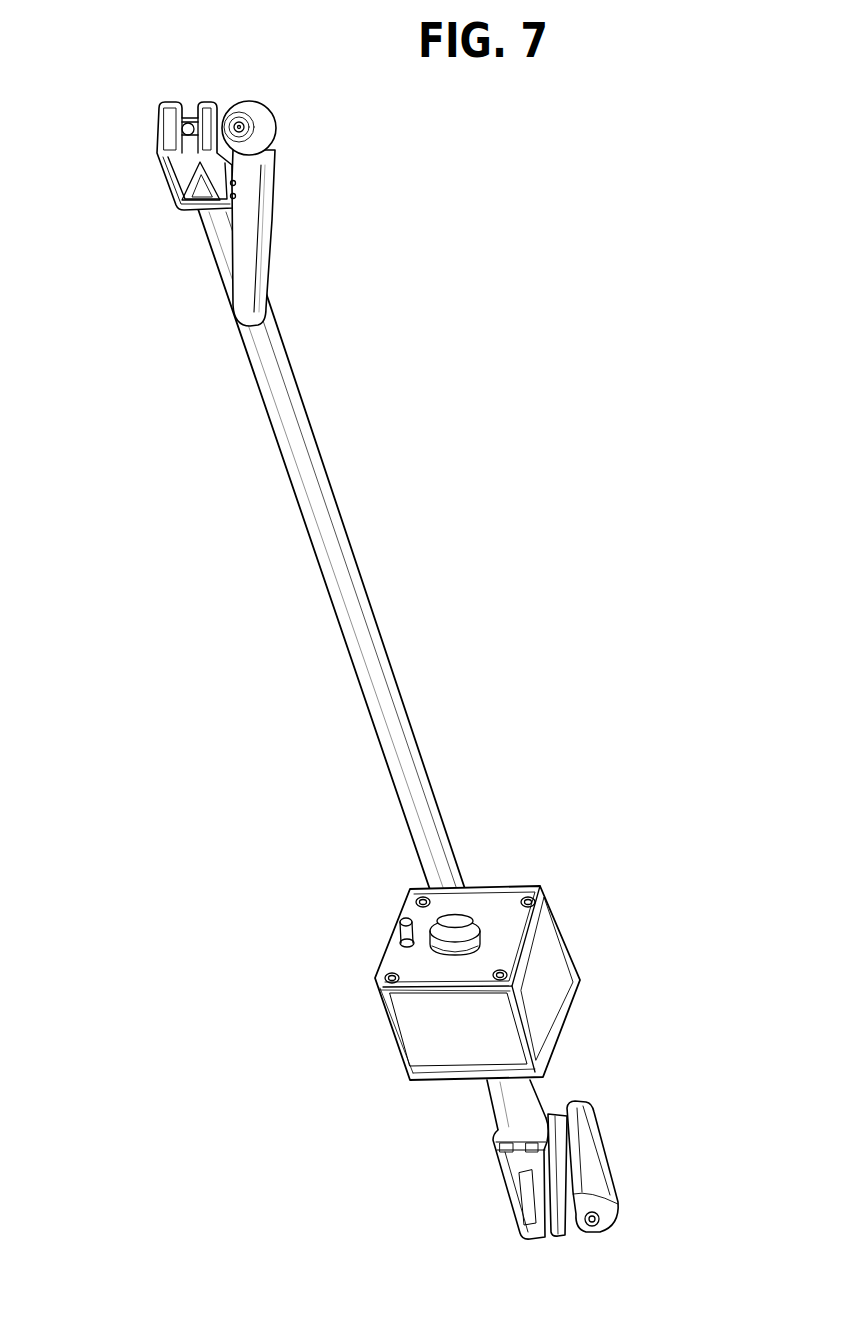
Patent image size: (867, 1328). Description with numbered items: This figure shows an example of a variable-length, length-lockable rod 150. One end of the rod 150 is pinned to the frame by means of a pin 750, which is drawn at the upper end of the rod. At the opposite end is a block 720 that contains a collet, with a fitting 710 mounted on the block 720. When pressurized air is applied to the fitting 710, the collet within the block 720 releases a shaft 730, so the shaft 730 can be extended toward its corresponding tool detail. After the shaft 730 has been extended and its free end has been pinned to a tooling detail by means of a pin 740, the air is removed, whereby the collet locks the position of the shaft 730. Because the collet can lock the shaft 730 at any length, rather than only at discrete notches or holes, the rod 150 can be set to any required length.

The variable-length rod 150 is at (488, 418).
The fitting 710 is at (400, 919).
The block 720 is at (385, 1021).
The shaft 730 is at (543, 1096).
The pin 740 is at (512, 1207).
The pin 750 is at (154, 130).